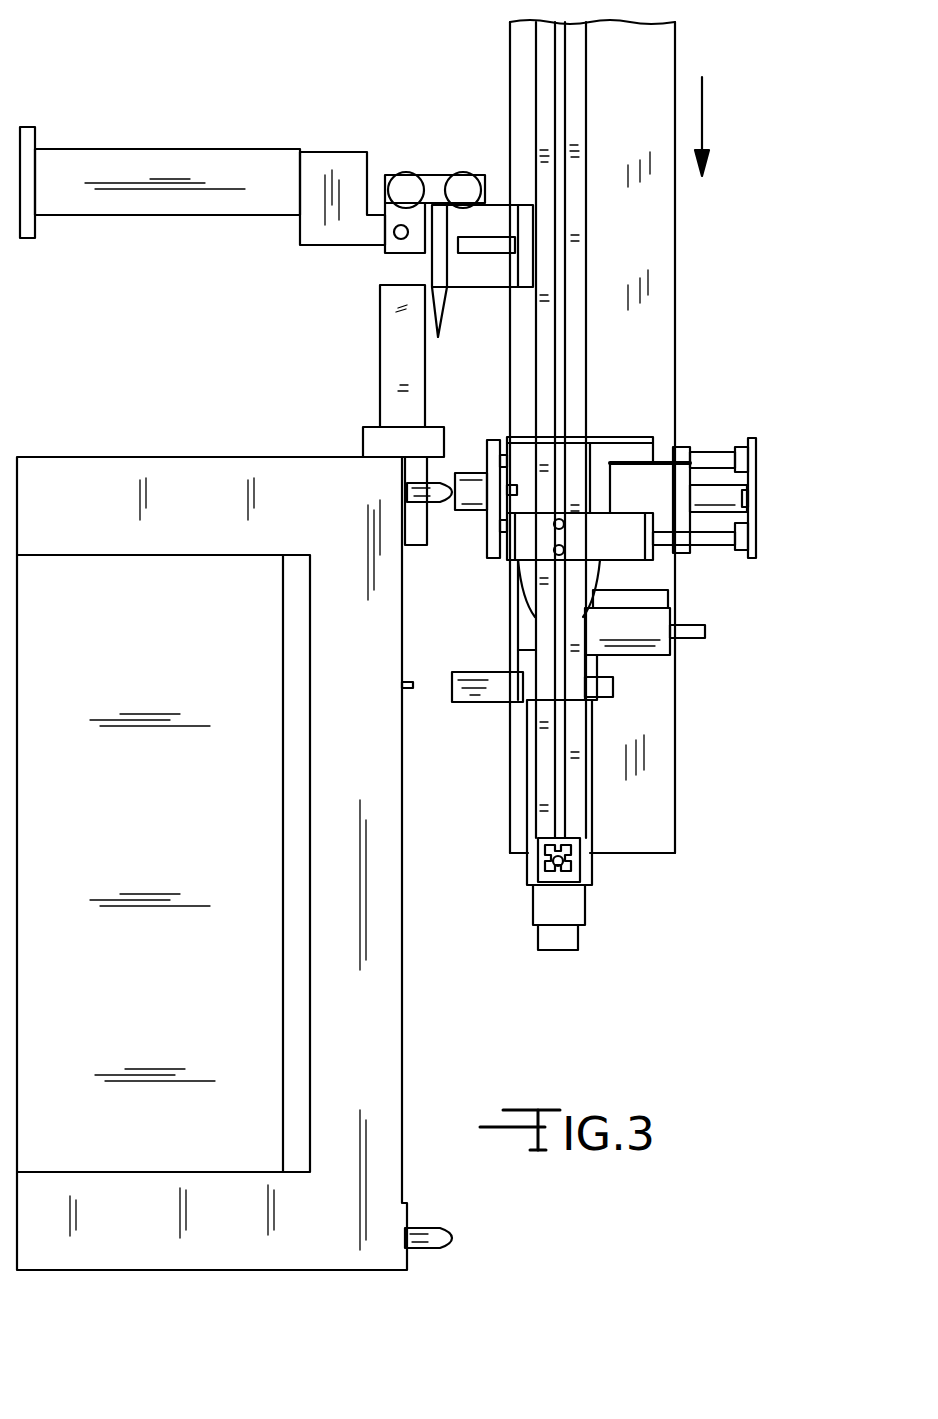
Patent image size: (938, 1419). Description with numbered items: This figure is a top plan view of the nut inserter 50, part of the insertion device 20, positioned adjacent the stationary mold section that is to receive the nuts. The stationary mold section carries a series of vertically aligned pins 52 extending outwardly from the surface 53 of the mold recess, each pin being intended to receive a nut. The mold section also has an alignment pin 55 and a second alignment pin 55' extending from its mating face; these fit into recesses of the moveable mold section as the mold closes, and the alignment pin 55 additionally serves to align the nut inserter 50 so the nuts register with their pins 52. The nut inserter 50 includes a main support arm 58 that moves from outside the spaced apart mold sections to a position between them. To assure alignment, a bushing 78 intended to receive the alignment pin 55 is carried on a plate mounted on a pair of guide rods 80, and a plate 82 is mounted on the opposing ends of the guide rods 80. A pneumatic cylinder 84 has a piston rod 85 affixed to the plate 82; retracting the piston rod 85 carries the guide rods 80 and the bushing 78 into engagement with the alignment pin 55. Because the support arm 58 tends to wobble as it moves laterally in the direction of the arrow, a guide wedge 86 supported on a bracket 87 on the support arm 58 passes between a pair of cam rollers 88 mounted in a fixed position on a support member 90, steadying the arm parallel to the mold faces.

The insertion device 20 is at (400, 467).
The nut inserter 50 is at (712, 290).
The pins 52 is at (413, 685).
The surface 53 is at (405, 930).
The alignment pin 55 is at (431, 540).
The second alignment pin 55' is at (470, 1255).
The main support arm 58 is at (577, 807).
The bushing 78 is at (468, 473).
The guide rods 80 is at (707, 460).
The plate 82 is at (803, 503).
The pneumatic cylinder 84 is at (627, 462).
The piston rod 85 is at (722, 497).
The guide wedge 86 is at (430, 263).
The bracket 87 is at (477, 275).
The cam rollers 88 is at (467, 171).
The support member 90 is at (323, 162).